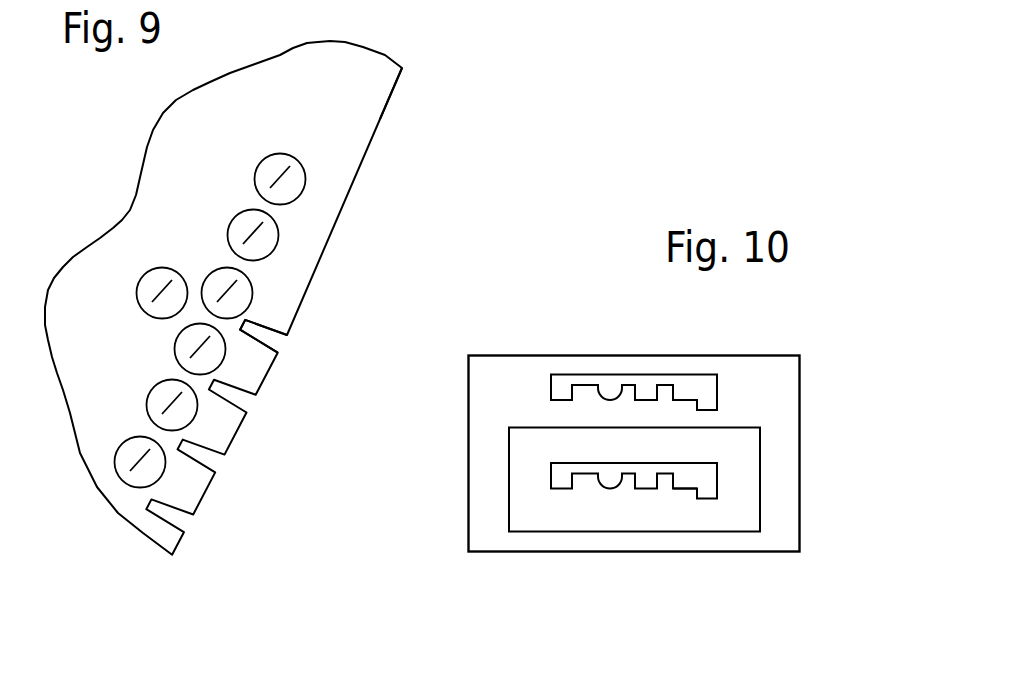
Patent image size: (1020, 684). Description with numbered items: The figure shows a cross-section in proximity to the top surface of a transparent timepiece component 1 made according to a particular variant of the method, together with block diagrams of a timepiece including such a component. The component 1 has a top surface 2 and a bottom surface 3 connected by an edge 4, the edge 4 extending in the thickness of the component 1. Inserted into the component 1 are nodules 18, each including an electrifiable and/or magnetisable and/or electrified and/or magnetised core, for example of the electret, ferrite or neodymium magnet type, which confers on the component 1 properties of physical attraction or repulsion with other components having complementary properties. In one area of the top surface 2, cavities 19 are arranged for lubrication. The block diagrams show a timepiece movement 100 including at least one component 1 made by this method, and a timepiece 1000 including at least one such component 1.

In FIG. 9, the transparent timepiece component 1 is at (357, 146).
In FIG. 10, the transparent timepiece component 1 is at (703, 385).
In FIG. 9, the top surface 2 is at (390, 99).
In FIG. 10, the top surface 2 is at (647, 447).
In FIG. 10, the bottom surface 3 is at (670, 500).
In FIG. 10, the edge 4 is at (533, 479).
In FIG. 9, the nodules 18 is at (295, 172).
In FIG. 9, the cavities 19 is at (260, 340).
In FIG. 10, the timepiece movement 100 is at (762, 463).
In FIG. 10, the timepiece 1000 is at (480, 413).